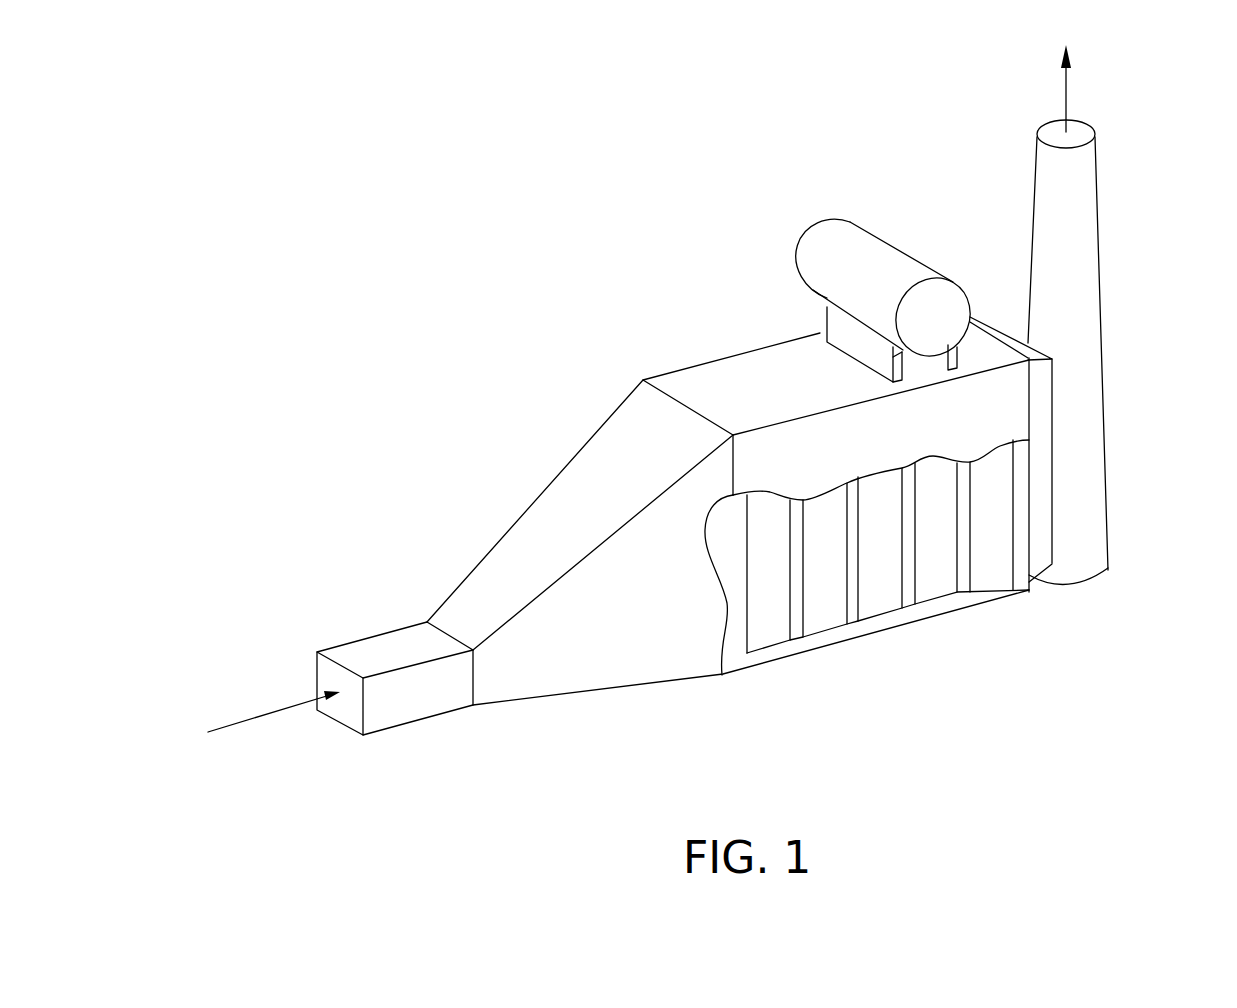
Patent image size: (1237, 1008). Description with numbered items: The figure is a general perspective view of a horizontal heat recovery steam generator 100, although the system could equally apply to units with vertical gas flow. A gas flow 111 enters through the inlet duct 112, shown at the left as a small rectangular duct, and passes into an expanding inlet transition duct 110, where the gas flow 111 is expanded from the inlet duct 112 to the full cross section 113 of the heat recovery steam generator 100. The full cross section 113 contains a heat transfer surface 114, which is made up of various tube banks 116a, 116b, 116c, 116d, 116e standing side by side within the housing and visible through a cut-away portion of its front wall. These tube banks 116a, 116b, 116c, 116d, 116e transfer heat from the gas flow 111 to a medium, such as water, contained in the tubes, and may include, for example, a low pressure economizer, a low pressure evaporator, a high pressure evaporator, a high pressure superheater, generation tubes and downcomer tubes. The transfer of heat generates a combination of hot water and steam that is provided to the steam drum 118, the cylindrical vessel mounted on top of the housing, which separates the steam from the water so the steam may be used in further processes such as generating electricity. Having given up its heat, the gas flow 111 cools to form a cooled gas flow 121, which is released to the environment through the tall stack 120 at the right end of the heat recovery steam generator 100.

The heat recovery steam generator 100 is at (615, 245).
The expanding inlet transition duct 110 is at (563, 517).
The gas flow 111 is at (270, 713).
The inlet duct 112 is at (350, 640).
The full cross section 113 is at (723, 690).
The heat transfer surface 114 is at (920, 720).
The tube bank 116a is at (758, 640).
The tube bank 116b is at (810, 613).
The tube bank 116c is at (882, 605).
The tube bank 116d is at (925, 575).
The tube bank 116e is at (1003, 570).
The steam drum 118 is at (838, 263).
The stack 120 is at (1100, 287).
The cooled gas flow 121 is at (1066, 95).